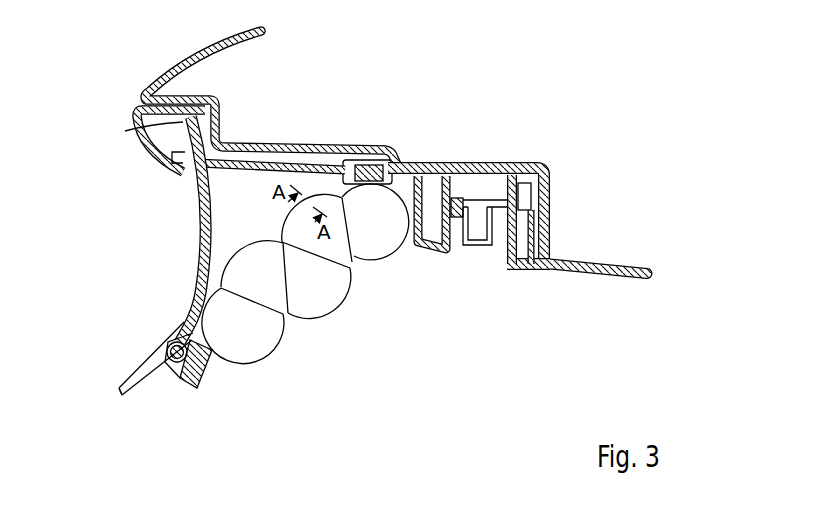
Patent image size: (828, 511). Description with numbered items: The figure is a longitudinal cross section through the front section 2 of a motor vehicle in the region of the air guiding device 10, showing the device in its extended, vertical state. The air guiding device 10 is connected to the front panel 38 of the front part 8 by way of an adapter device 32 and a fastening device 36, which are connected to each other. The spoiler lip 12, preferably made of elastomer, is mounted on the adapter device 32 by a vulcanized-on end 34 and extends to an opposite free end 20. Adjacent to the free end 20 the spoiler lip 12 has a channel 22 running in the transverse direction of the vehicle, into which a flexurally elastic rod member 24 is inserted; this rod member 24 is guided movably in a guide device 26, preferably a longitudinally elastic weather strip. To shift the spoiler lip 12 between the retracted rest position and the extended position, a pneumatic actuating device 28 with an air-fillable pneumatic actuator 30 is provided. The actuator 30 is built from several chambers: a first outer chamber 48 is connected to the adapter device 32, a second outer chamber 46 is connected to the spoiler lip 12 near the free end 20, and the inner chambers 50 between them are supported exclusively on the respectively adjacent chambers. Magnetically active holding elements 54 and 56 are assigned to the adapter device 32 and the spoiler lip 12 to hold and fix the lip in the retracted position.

The front section 2 is at (552, 91).
The front part 8 is at (528, 219).
The air guiding device 10 is at (121, 231).
The spoiler lip 12 is at (196, 268).
The free end 20 is at (106, 401).
The channel 22 is at (158, 372).
The flexurally elastic rod member 24 is at (172, 362).
The guide device 26 is at (170, 345).
The pneumatic actuating device 28 is at (362, 346).
The pneumatic actuator 30 is at (254, 278).
The adapter device 32 is at (286, 159).
The vulcanized-on end 34 is at (143, 133).
The fastening device 36 is at (534, 291).
The front panel 38 is at (193, 50).
The second outer chamber 46 is at (267, 343).
The first outer chamber 48 is at (393, 246).
The inner chambers 50 is at (283, 312).
The magnetically active holding element 54 is at (368, 163).
The magnetically active holding element 56 is at (212, 378).